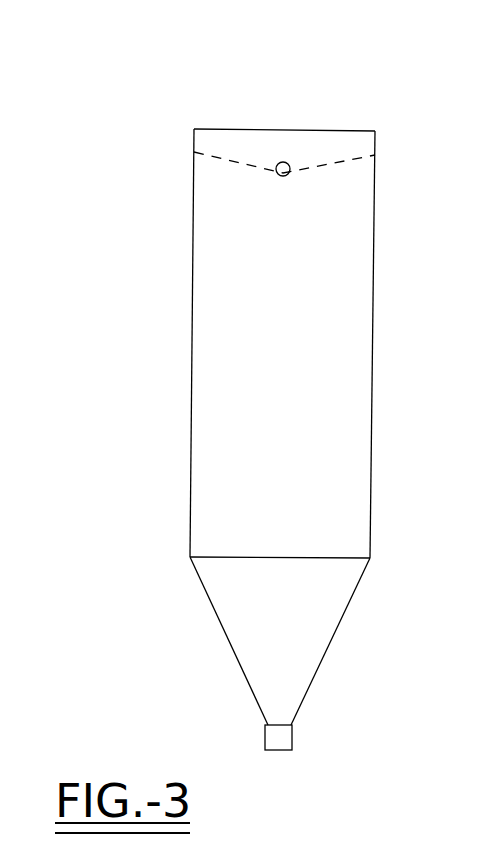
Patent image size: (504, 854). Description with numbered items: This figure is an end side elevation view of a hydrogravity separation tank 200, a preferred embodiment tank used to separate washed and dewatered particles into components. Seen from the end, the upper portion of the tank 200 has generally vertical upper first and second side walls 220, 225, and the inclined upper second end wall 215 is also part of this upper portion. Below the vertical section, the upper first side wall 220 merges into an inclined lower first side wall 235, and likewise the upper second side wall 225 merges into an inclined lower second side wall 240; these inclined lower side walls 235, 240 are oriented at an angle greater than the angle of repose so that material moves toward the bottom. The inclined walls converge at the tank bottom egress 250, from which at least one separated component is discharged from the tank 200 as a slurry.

The tank 200 is at (279, 411).
The inclined upper second end wall 215 is at (252, 303).
The upper first side wall 220 is at (191, 345).
The upper second side wall 225 is at (373, 353).
The inclined lower first side wall 235 is at (225, 643).
The inclined lower second side wall 240 is at (328, 647).
The tank bottom egress 250 is at (289, 750).